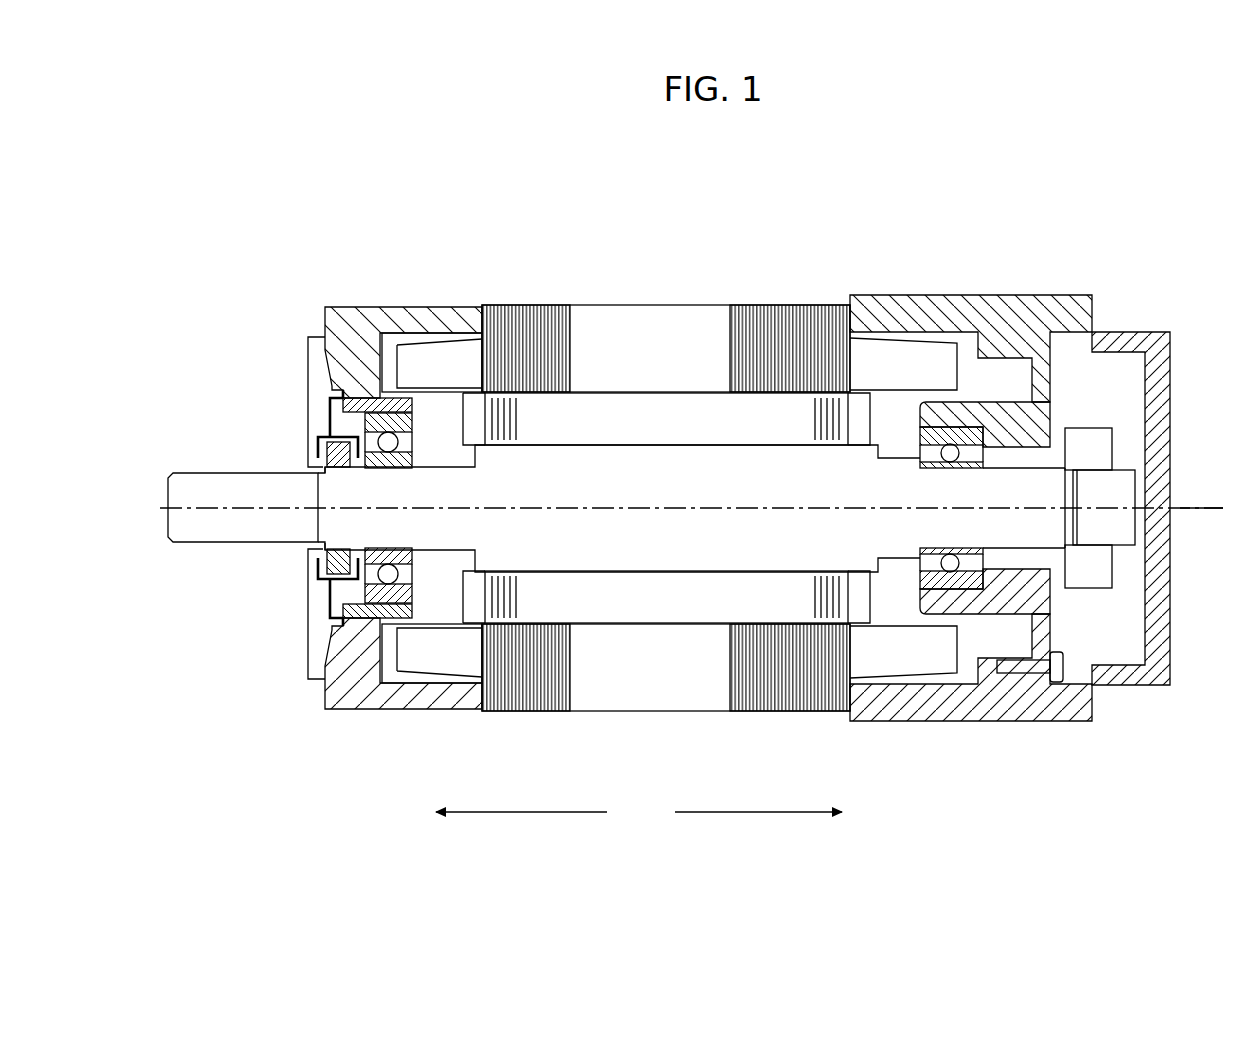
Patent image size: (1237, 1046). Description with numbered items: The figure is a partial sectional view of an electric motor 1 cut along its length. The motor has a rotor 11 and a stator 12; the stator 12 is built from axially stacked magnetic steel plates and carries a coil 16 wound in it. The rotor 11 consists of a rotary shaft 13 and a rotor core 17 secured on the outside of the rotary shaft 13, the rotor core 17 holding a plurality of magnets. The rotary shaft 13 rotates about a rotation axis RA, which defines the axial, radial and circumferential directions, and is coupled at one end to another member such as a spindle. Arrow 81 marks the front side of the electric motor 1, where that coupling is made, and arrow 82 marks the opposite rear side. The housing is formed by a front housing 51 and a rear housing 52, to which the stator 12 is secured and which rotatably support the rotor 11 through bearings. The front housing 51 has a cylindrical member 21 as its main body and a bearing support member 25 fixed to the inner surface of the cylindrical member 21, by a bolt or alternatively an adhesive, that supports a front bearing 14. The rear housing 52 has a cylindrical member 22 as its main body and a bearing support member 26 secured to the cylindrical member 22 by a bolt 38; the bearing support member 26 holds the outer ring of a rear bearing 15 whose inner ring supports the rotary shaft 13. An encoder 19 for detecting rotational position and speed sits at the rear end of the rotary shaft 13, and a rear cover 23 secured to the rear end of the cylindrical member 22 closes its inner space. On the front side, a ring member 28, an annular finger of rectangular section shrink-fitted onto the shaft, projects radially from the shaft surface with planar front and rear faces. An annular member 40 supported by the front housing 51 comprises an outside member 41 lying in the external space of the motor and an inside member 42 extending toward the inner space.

The electric motor 1 is at (979, 200).
The rotor 11 is at (579, 600).
The stator 12 is at (674, 714).
The rotary shaft 13 is at (625, 540).
The front bearing 14 is at (400, 600).
The rear bearing 15 is at (955, 575).
The coil 16 is at (440, 362).
The rotor core 17 is at (705, 598).
The encoder 19 is at (1097, 570).
The cylindrical member 21 is at (410, 313).
The cylindrical member 22 is at (937, 300).
The rear cover 23 is at (1120, 334).
The bearing support member 25 is at (352, 397).
The bearing support member 26 is at (1020, 615).
The ring member 28 is at (327, 465).
The bolt 38 is at (1060, 684).
The annular member 40 is at (212, 426).
The outside member 41 is at (316, 447).
The inside member 42 is at (346, 402).
The front housing 51 is at (321, 306).
The rear housing 52 is at (1032, 292).
The arrow 81 is at (553, 812).
The arrow 82 is at (740, 812).
The rotation axis RA is at (1210, 504).